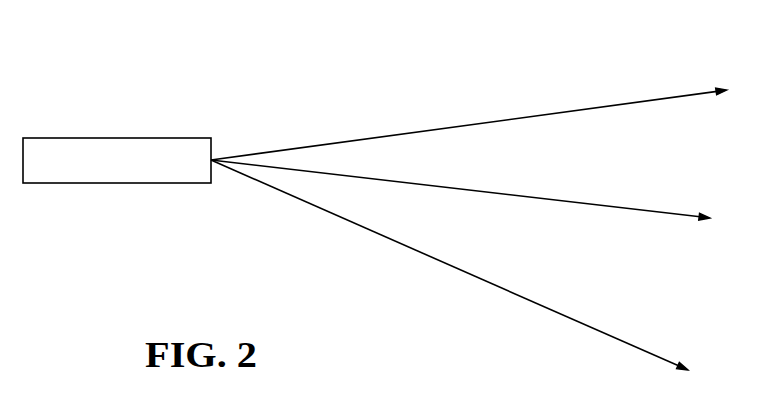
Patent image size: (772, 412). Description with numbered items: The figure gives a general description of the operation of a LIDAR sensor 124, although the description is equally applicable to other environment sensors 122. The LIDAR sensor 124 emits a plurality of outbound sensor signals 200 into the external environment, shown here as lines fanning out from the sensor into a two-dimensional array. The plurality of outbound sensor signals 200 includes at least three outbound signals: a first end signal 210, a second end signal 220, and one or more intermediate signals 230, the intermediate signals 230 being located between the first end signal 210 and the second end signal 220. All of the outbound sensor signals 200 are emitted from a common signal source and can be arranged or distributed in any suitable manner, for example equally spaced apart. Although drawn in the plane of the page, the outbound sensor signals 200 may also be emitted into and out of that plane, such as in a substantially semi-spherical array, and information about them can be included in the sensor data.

The outbound sensor signal 200 is at (461, 80).
The environment sensor 122 is at (121, 118).
The LIDAR sensor 124 is at (115, 183).
The first end signal 210 is at (650, 100).
The second end signal 220 is at (615, 338).
The intermediate signal 230 is at (655, 211).